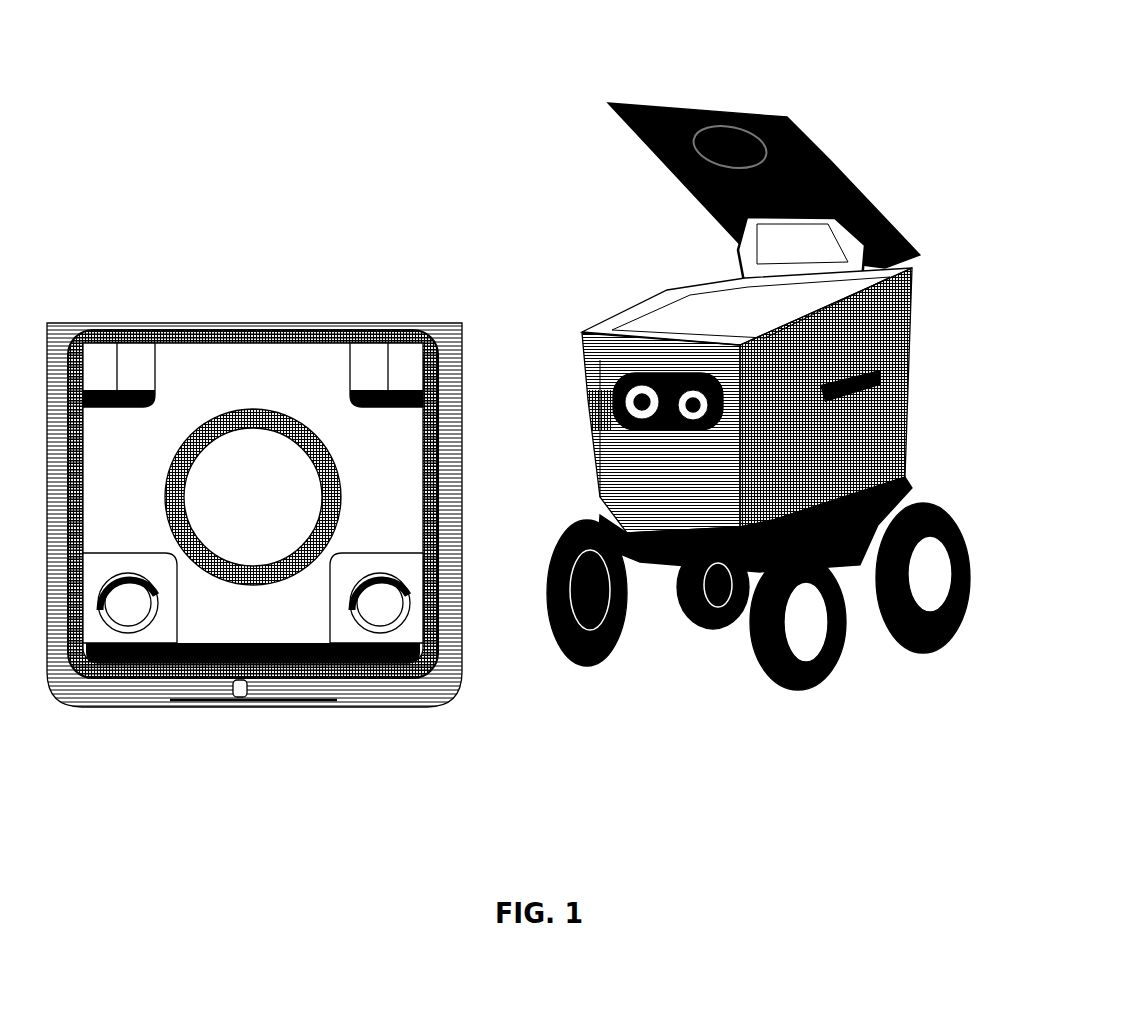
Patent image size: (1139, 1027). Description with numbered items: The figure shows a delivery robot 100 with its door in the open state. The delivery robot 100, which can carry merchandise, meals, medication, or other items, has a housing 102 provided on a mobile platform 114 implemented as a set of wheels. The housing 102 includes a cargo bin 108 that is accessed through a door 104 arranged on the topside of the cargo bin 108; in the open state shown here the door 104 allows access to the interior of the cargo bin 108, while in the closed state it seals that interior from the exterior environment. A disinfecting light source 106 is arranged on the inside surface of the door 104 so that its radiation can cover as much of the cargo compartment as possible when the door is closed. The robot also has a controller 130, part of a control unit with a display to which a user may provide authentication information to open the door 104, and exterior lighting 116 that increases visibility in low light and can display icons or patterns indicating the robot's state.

The delivery robot 100 is at (1052, 133).
The housing 102 is at (857, 350).
The door 104 is at (822, 190).
The disinfecting light source 106 is at (270, 421).
The cargo bin 108 is at (747, 332).
The mobile platform 114 is at (860, 533).
The exterior lighting 116 is at (637, 405).
The controller 130 is at (792, 270).